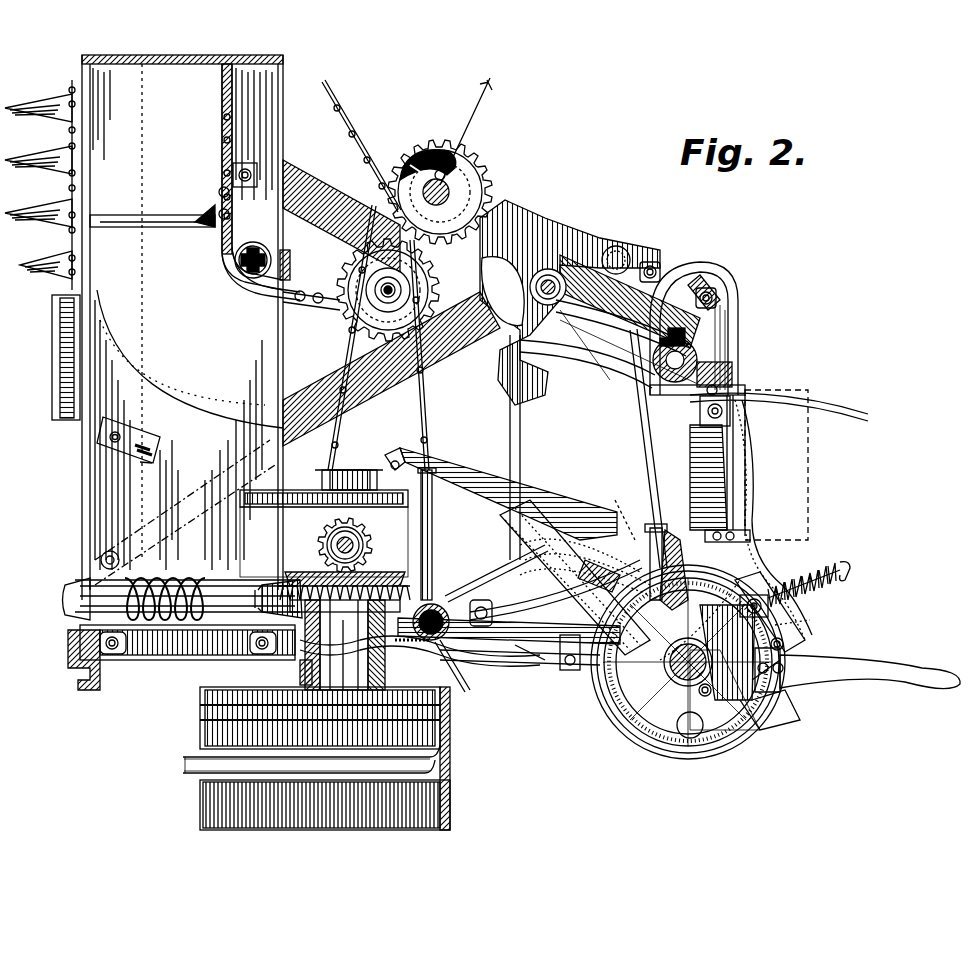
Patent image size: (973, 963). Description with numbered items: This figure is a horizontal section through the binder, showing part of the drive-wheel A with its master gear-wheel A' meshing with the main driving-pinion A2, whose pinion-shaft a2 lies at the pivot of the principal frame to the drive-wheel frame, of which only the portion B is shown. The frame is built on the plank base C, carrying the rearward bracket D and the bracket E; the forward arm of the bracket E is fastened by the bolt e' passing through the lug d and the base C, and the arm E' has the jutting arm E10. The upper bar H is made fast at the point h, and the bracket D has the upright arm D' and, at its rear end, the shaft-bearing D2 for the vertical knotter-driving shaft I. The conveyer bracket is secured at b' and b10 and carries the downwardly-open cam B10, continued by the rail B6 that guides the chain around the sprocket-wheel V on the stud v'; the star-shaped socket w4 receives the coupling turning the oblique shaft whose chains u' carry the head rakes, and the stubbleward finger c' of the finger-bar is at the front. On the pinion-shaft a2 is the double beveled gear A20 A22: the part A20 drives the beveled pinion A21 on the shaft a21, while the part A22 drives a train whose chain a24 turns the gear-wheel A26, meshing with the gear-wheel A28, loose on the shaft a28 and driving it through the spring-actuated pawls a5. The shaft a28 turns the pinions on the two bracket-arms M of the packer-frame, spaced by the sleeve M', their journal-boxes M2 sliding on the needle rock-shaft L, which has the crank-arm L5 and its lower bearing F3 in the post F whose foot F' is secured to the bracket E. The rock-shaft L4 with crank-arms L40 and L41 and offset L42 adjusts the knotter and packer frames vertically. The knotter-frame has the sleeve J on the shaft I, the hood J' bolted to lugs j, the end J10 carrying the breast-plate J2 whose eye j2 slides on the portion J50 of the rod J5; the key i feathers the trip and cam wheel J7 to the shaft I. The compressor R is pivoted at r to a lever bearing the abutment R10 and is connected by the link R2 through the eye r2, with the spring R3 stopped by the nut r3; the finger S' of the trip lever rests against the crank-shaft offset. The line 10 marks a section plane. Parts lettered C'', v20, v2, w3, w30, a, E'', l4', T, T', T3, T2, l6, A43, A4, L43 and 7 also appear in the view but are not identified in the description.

The base C is at (182, 327).
The hopper teeth C'' is at (43, 185).
The stubbleward finger of the finger-bar c' is at (47, 345).
The portion of drive-wheel frame B is at (235, 222).
The rail B6 is at (236, 110).
The cam B10 is at (232, 285).
The sprocket-wheel V is at (236, 258).
The valve bar v20 is at (213, 205).
The valve plate v2 is at (165, 226).
The stud v' is at (334, 338).
The chains u' is at (207, 157).
The socket w4 is at (222, 275).
The rod w3 is at (361, 146).
The pivot w30 is at (313, 287).
The fastening point of bracket b' is at (285, 206).
The fastening point of bracket b10 is at (286, 258).
The fastening point of bar H h is at (100, 440).
The upper bar H is at (131, 472).
The bolt e' is at (83, 556).
The lug d is at (215, 580).
The bracket D is at (181, 657).
The master gear-wheel A' is at (299, 718).
The drive-wheel A is at (341, 758).
The main driving-pinion A2 is at (360, 750).
The main driving pinion-shaft a2 is at (302, 673).
The beveled gear part A20 is at (372, 540).
The beveled pinion A21 is at (330, 530).
The shaft a21 is at (320, 545).
The pinion a is at (335, 550).
The beveled gear part A22 is at (378, 565).
The arm of bracket E E' is at (341, 216).
The cam E'' is at (440, 181).
The spring-actuated pawls a5 is at (443, 172).
The section line 10 is at (471, 123).
The gear-wheel A28 is at (475, 170).
The shaft a28 is at (449, 190).
The gear-wheel A26 is at (345, 262).
The arm E10 is at (292, 290).
The chain a24 is at (375, 305).
The bracket E is at (491, 338).
The bracket-arms of packer-frame M is at (570, 302).
The sleeve M' is at (489, 350).
The journal-box M2 is at (590, 360).
The needle rock-shaft L is at (640, 372).
The rock-shaft L4 is at (540, 605).
The crank-arm L41 is at (565, 355).
The offset portion L42 is at (520, 428).
The crank-arm L5 is at (628, 258).
The foot or flange F' is at (700, 328).
The shaft l4' is at (708, 338).
The post F is at (733, 354).
The lower bearing F3 is at (700, 400).
The tongue T is at (779, 467).
The tongue T' is at (789, 465).
The compressor R is at (742, 495).
The tongue T3 is at (727, 538).
The tongue T2 is at (745, 542).
The link R2 is at (823, 565).
The spring R3 is at (770, 590).
The nut r3 is at (845, 576).
The eye r2 is at (800, 600).
The abutment R10 is at (623, 511).
The rod l6 is at (640, 420).
The knotter-driving shaft I is at (665, 530).
The key i is at (650, 735).
The sleeve J is at (830, 678).
The lugs j is at (770, 720).
The hood J' is at (725, 724).
The trip and cam wheel J7 is at (698, 738).
The pivot r is at (790, 648).
The breast-plate J2 is at (548, 512).
The loop or eye j2 is at (405, 465).
The vertical portion of rod J50 is at (405, 468).
The rod J5 is at (435, 510).
The projecting end of hood J10 is at (530, 525).
The finger S' is at (496, 573).
The bracket A43 is at (599, 568).
The bar A4 is at (520, 590).
The rod L43 is at (460, 660).
The crank-arm L40 is at (576, 672).
The upright arm D' is at (447, 658).
The shaft-bearing D2 is at (545, 660).
The section line 7 is at (9, 613).